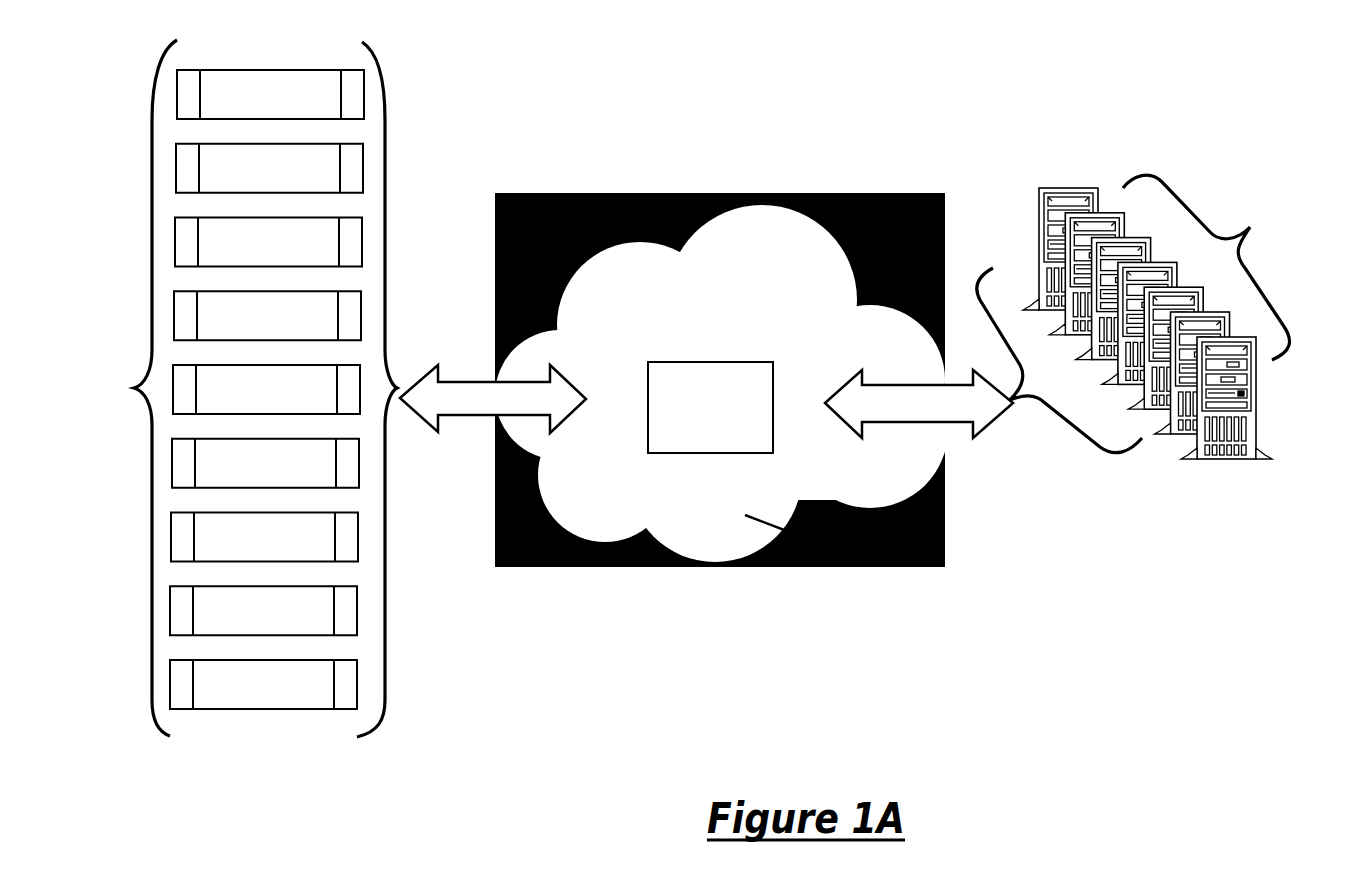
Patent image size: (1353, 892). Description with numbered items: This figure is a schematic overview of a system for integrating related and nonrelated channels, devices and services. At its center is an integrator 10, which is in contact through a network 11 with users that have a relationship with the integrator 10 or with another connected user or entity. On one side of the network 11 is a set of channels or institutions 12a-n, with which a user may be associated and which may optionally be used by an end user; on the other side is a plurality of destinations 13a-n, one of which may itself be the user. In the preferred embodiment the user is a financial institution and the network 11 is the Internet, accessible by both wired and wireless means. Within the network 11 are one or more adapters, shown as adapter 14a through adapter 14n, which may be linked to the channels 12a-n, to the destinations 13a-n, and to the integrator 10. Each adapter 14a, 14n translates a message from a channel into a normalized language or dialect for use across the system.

The integrator 10 is at (708, 362).
The network 11 is at (893, 568).
The channels or institutions 12a-n is at (221, 388).
The destinations 13a-n is at (1153, 317).
The adapter 14a is at (616, 362).
The adapter 14n is at (802, 362).